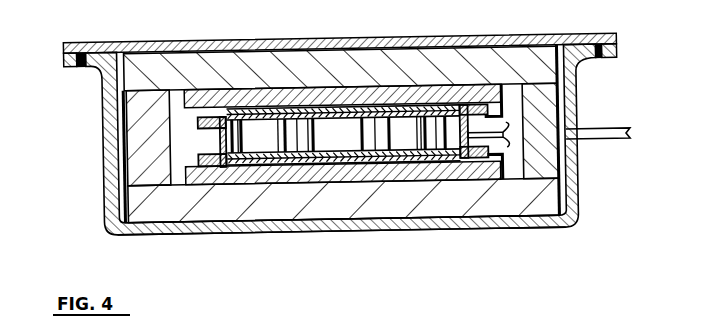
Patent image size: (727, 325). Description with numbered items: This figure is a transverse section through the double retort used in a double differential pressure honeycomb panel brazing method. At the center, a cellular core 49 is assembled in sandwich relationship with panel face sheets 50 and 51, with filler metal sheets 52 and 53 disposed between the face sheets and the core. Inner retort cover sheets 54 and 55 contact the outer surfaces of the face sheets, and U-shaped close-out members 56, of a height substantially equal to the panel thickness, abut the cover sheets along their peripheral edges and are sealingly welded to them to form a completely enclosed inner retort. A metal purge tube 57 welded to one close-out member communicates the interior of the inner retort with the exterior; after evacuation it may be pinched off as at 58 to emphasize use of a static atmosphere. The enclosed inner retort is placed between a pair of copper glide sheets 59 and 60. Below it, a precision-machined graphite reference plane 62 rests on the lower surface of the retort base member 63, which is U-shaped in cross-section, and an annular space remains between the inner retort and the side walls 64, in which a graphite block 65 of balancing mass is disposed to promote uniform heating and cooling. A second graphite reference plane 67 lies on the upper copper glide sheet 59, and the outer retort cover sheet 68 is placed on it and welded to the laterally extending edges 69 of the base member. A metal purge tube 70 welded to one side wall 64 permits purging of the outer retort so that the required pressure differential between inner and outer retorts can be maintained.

The cellular core 49 is at (359, 135).
The panel face sheet 50 is at (283, 117).
The panel face sheet 51 is at (432, 170).
The filler metal sheet 52 is at (279, 120).
The filler metal sheet 53 is at (421, 152).
The inner retort cover sheet 54 is at (203, 124).
The inner retort cover sheet 55 is at (186, 166).
The U-shaped close-out member 56 is at (205, 133).
The metal purge tube 57 is at (497, 141).
The pinch-off 58 is at (502, 130).
The copper glide sheet 59 is at (388, 92).
The copper glide sheet 60 is at (332, 173).
The graphite reference plane 62 is at (348, 203).
The retort base member 63 is at (500, 234).
The side walls 64 is at (103, 133).
The graphite block 65 is at (134, 186).
The graphite reference plane 67 is at (374, 73).
The outer retort cover sheet 68 is at (562, 33).
The laterally extending edges 69 is at (67, 66).
The metal purge tube 70 is at (618, 124).